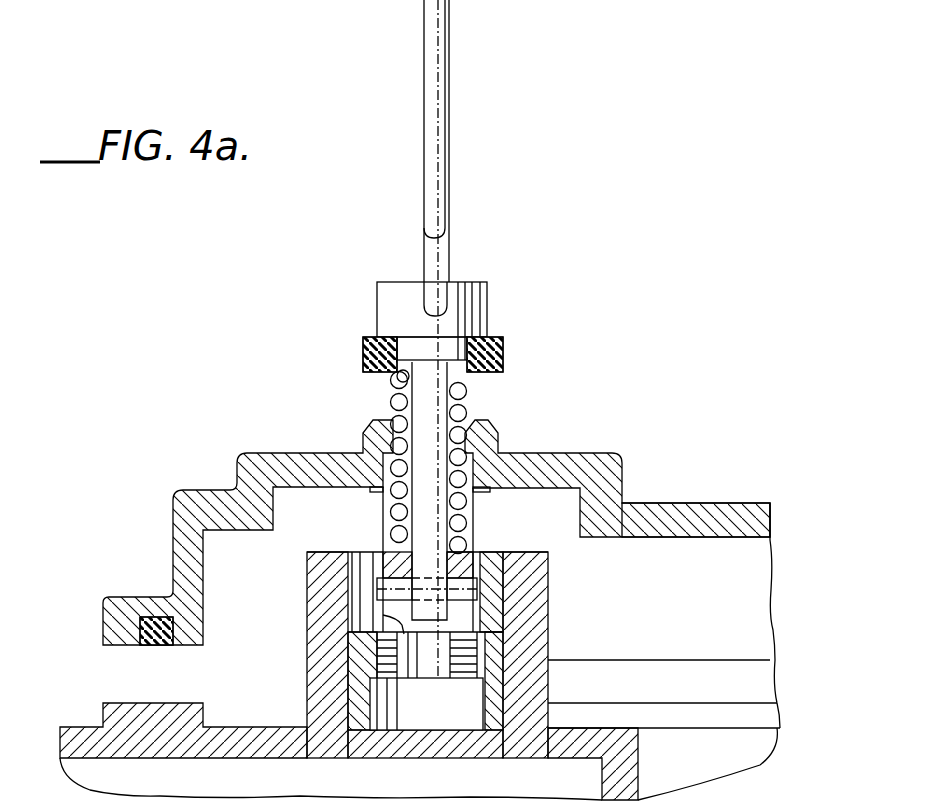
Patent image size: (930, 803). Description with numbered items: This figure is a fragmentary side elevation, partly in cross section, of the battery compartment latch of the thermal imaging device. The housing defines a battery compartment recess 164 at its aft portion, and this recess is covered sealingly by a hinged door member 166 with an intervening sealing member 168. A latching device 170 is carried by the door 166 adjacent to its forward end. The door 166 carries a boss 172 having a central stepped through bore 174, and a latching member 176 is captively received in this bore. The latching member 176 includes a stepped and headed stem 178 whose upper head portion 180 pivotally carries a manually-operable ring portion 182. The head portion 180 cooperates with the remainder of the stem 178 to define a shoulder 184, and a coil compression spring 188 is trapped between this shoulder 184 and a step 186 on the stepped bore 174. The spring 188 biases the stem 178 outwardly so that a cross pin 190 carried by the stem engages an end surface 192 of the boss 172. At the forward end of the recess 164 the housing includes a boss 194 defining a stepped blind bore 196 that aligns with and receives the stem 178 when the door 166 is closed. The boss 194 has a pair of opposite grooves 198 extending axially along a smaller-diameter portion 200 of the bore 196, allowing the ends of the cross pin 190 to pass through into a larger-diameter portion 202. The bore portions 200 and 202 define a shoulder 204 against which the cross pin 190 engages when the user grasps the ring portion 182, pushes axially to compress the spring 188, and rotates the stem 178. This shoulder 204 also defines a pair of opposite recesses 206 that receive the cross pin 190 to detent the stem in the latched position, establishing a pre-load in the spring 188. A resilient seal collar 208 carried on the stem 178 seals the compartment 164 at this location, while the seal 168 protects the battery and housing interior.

The battery compartment recess 164 is at (734, 752).
The hinged door member 166 is at (712, 503).
The sealing member 168 is at (153, 640).
The latching device 170 is at (576, 233).
The boss 172 is at (437, 528).
The stepped through bore 174 is at (463, 428).
The latching member 176 is at (467, 332).
The stem 178 is at (398, 402).
The head portion 180 is at (377, 295).
The ring portion 182 is at (450, 98).
The shoulder 184 is at (397, 376).
The step 186 is at (470, 566).
The coil compression spring 188 is at (482, 492).
The cross pin 190 is at (477, 592).
The end surface 192 is at (385, 582).
The boss 194 is at (513, 673).
The stepped blind bore 196 is at (490, 712).
The grooves 198 is at (350, 636).
The smaller-diameter portion 200 is at (383, 615).
The larger-diameter portion 202 is at (385, 720).
The shoulder 204 is at (375, 722).
The recesses 206 is at (424, 679).
The resilient seal collar 208 is at (503, 362).